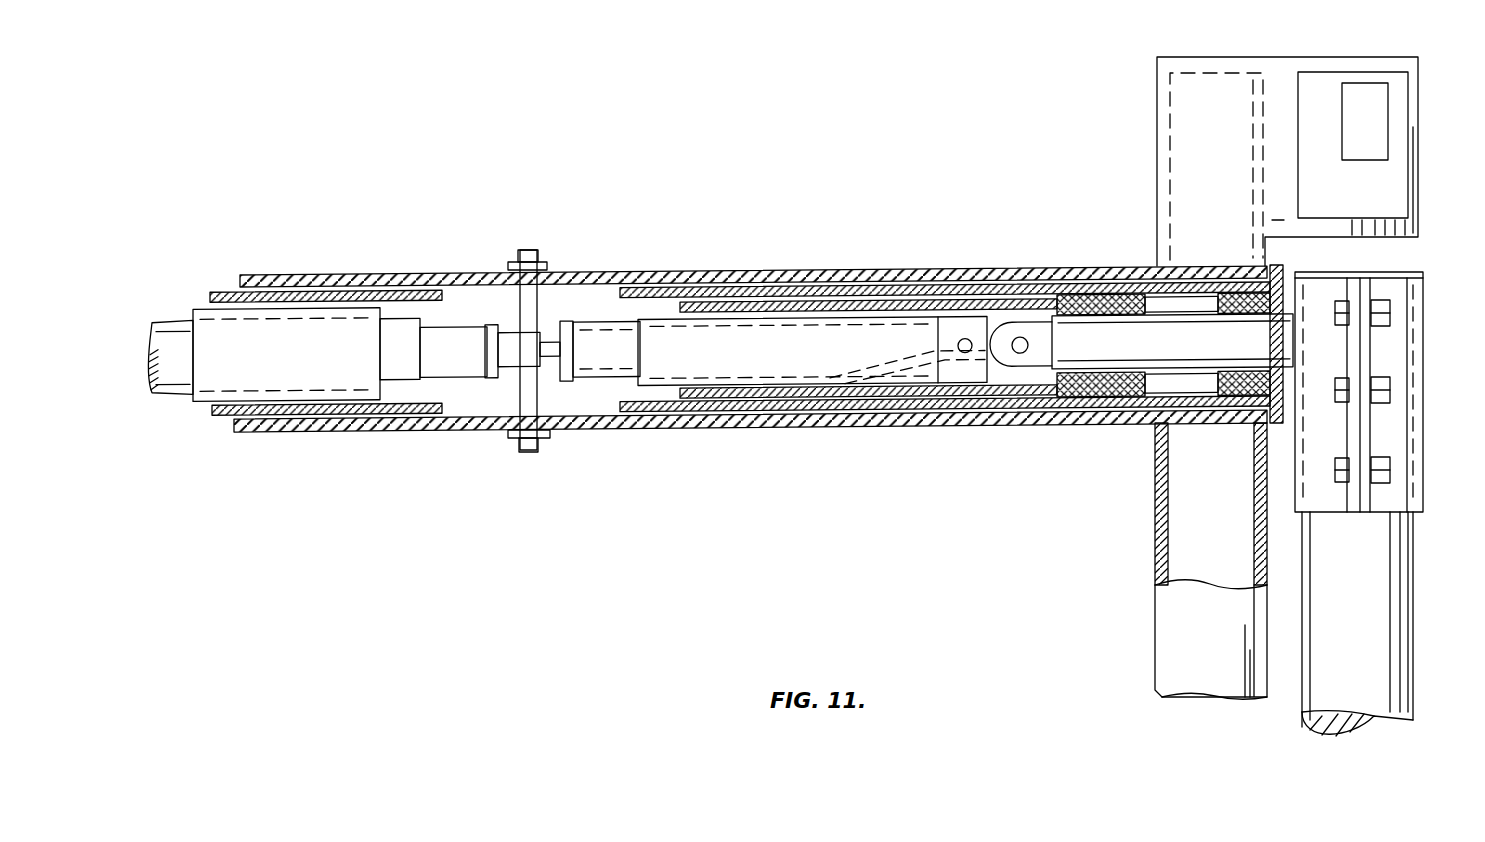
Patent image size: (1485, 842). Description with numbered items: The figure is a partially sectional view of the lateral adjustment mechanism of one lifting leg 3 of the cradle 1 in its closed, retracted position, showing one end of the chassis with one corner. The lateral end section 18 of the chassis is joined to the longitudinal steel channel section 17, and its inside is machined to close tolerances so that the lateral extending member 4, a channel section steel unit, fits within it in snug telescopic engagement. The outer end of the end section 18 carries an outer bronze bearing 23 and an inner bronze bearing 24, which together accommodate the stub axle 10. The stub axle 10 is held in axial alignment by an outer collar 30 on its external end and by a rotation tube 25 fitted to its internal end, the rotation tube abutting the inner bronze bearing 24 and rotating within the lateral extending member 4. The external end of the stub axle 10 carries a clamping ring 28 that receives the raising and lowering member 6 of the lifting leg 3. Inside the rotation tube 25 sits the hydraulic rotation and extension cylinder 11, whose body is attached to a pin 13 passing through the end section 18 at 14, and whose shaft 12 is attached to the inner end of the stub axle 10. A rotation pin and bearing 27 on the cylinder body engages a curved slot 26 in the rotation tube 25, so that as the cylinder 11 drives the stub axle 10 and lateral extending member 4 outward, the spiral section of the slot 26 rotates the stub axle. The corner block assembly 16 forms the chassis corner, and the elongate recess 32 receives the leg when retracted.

The cradle 1 is at (282, 264).
The lifting leg 3 is at (1382, 504).
The lateral extending member 4 is at (853, 385).
The raising and lowering member 6 is at (1385, 633).
The stub axle 10 is at (1100, 338).
The hydraulic rotation and extension cylinder 11 is at (450, 277).
The shaft 12 is at (338, 277).
The pin 13 is at (547, 437).
The pin passage through the section 14 is at (497, 430).
The corner block assembly 16 is at (1205, 155).
The longitudinal steel channel section 17 is at (1153, 556).
The lateral end section 18 is at (790, 404).
The outer bronze bearing 23 is at (1236, 393).
The inner bronze bearing 24 is at (1132, 398).
The rotation tube 25 is at (729, 393).
The curved slot 26 is at (893, 372).
The rotation pin and bearing 27 is at (962, 336).
The clamping ring 28 is at (1388, 364).
The outer collar 30 is at (1278, 425).
The elongate recess 32 is at (1278, 612).